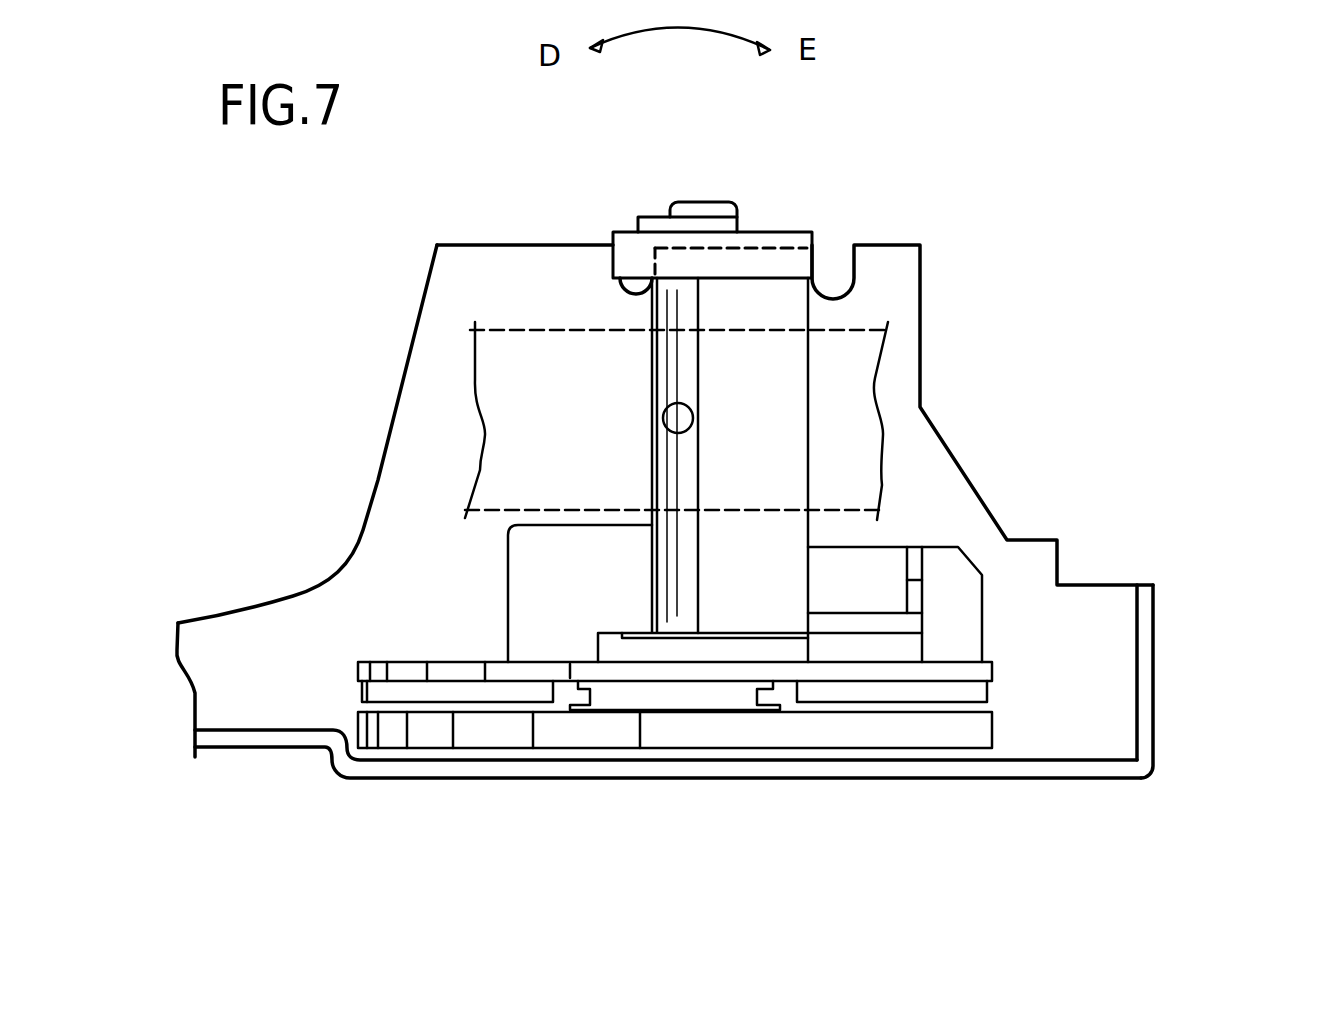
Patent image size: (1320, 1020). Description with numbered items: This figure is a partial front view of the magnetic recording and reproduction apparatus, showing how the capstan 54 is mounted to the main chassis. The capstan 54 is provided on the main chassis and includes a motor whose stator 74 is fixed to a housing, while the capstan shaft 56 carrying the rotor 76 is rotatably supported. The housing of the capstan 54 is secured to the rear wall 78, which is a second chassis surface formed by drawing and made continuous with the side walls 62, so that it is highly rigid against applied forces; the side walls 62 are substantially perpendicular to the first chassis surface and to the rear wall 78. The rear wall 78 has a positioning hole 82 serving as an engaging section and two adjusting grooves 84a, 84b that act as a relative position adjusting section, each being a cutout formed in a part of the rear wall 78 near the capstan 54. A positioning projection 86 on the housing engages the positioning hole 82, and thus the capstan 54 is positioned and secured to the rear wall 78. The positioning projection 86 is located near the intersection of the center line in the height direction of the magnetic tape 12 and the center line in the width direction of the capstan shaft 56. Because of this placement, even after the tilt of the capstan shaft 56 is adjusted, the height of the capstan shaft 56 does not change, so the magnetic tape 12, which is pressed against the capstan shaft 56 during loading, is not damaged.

The magnetic tape 12 is at (857, 372).
The capstan 54 is at (912, 740).
The capstan shaft 56 is at (692, 565).
The side walls 62 is at (1145, 622).
The stator 74 is at (405, 665).
The rotor 76 is at (442, 732).
The rear wall 78 is at (460, 262).
The positioning hole 82 is at (652, 437).
The adjusting groove 84a is at (840, 248).
The adjusting groove 84b is at (628, 262).
The positioning projection 86 is at (691, 425).